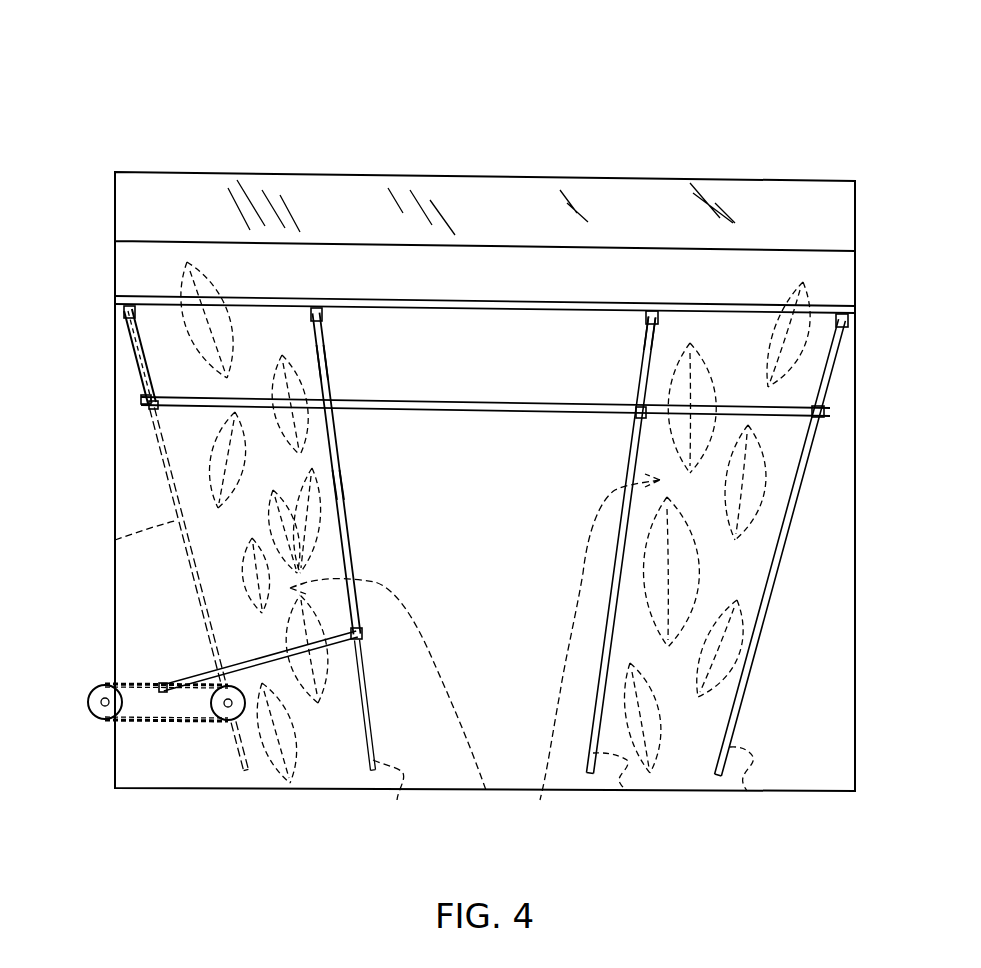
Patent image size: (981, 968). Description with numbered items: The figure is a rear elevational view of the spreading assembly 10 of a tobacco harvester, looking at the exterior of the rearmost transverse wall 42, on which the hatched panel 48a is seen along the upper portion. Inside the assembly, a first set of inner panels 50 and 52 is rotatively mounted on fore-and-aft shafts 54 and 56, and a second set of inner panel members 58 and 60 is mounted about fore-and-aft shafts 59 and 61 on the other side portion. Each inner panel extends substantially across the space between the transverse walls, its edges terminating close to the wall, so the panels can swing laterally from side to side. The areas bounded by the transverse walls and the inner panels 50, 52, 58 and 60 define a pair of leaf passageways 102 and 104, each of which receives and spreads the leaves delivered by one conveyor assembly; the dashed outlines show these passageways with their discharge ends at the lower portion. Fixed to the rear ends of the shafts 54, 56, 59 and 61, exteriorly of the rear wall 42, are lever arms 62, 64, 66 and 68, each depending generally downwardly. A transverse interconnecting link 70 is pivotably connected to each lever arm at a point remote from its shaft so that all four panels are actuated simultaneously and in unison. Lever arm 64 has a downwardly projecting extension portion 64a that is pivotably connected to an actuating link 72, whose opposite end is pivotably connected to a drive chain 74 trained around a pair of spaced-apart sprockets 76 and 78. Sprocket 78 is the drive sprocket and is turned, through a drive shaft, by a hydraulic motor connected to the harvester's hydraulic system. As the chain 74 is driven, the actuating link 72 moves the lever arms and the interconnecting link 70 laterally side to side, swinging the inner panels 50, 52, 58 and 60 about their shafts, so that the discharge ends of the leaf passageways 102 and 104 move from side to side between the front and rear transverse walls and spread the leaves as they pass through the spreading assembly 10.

The spreading assembly 10 is at (433, 86).
The rearmost transverse wall 42 is at (491, 610).
The transparent panel 48a is at (647, 213).
The inner panel 50 is at (115, 540).
The inner panel 52 is at (403, 780).
The shaft 54 is at (127, 311).
The shaft 56 is at (314, 311).
The inner panel member 58 is at (627, 790).
The shaft 59 is at (661, 317).
The inner panel member 60 is at (743, 790).
The shaft 61 is at (845, 322).
The lever arm 62 is at (143, 384).
The lever arm 64 is at (321, 365).
The extension portion 64a is at (338, 484).
The lever arm 66 is at (658, 345).
The lever arm 68 is at (826, 392).
The transverse interconnecting link 70 is at (387, 402).
The actuating link 72 is at (203, 667).
The drive chain 74 is at (140, 683).
The sprocket 76 is at (97, 717).
The drive sprocket 78 is at (225, 713).
The leaf passageway 102 is at (483, 790).
The leaf passageway 104 is at (547, 790).